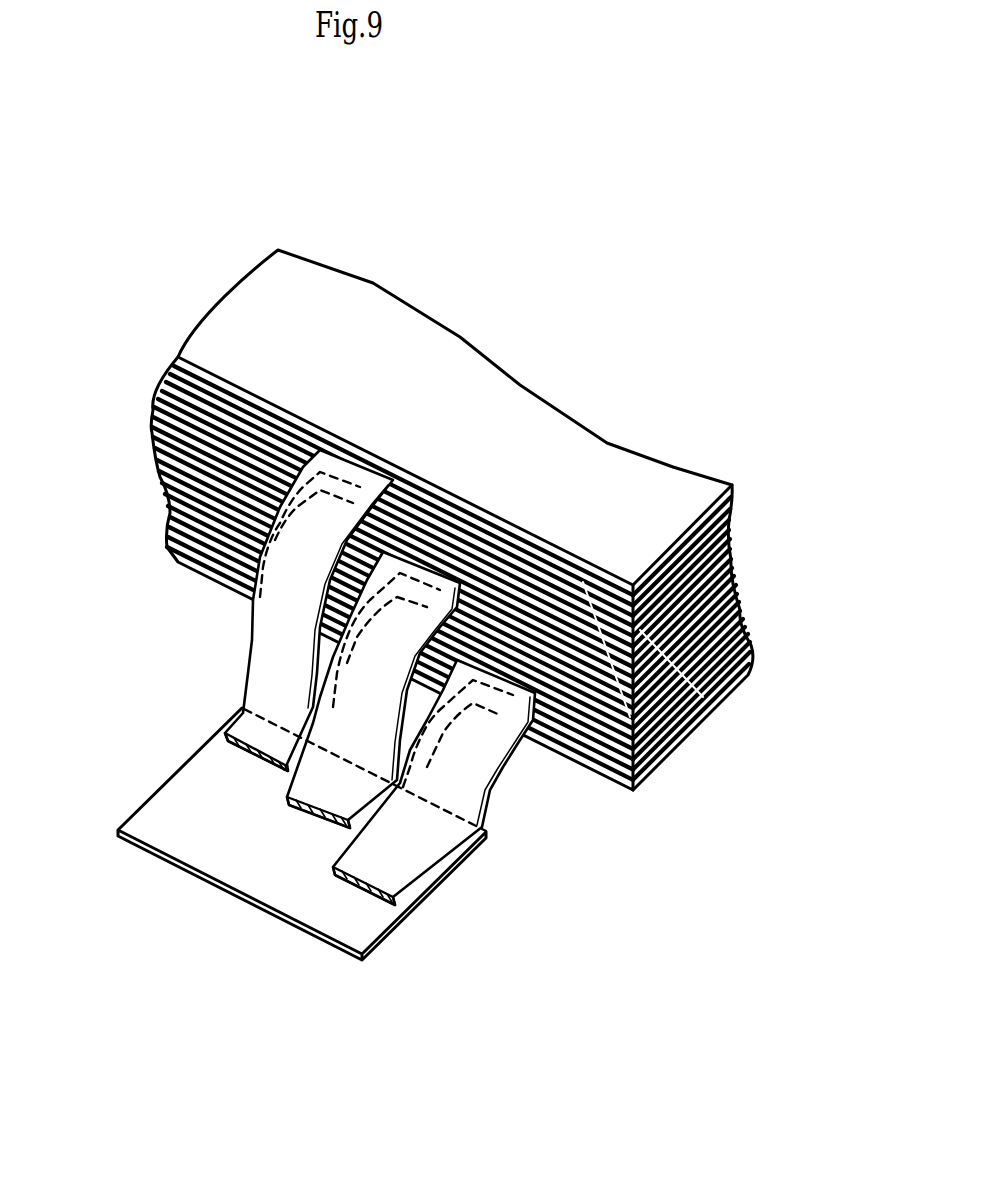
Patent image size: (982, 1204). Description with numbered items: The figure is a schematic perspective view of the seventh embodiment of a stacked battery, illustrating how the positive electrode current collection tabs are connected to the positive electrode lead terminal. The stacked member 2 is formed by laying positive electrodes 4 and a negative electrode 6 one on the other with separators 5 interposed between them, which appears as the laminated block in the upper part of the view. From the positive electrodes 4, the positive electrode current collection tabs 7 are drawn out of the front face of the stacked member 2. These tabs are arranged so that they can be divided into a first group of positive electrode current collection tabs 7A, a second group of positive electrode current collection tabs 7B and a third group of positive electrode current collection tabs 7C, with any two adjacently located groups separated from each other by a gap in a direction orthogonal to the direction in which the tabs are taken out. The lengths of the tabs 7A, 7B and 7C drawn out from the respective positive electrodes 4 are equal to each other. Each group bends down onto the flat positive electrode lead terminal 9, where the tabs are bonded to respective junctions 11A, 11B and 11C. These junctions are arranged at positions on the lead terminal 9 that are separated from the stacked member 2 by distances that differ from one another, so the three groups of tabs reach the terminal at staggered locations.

The stacked member 2 is at (477, 578).
The positive electrode 4 is at (657, 763).
The separator 5 is at (703, 697).
The negative electrode 6 is at (603, 573).
The positive electrode current collection tabs 7 is at (327, 718).
The first group of positive electrode current collection tabs 7A is at (458, 823).
The second group of positive electrode current collection tabs 7B is at (302, 758).
The third group of positive electrode current collection tabs 7C is at (231, 630).
The positive electrode lead terminal 9 is at (243, 818).
The junction 11A is at (393, 897).
The junction 11B is at (290, 797).
The junction 11C is at (225, 735).